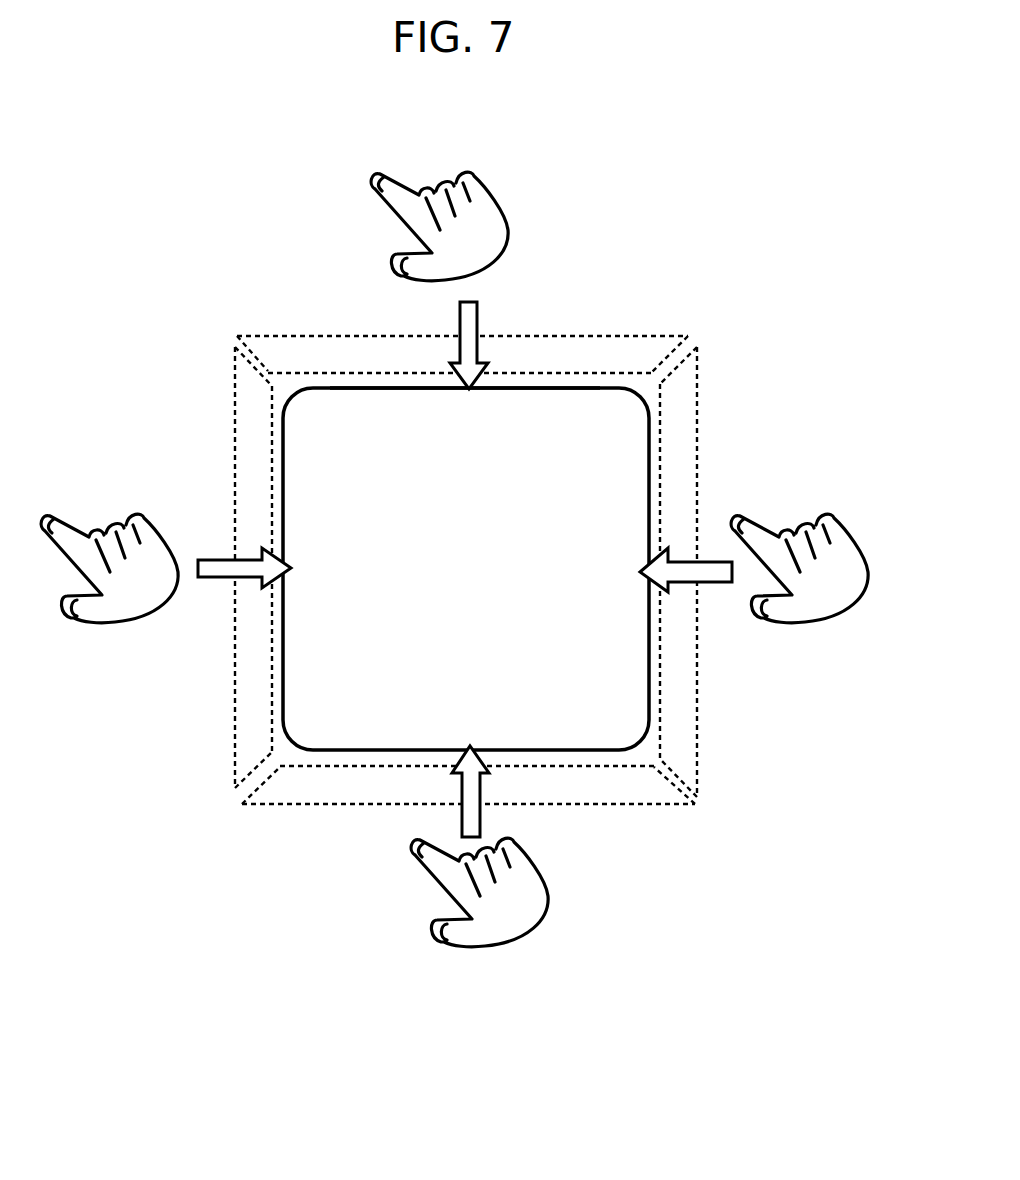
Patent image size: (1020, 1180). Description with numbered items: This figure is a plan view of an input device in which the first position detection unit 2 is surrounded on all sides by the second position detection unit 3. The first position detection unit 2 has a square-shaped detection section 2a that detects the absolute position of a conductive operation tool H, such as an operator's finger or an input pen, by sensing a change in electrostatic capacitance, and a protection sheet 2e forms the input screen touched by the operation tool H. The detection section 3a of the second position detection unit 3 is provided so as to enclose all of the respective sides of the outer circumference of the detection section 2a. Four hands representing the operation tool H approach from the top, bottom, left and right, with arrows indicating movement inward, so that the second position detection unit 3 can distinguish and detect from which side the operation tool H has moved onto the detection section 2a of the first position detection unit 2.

The first position detection unit 2 is at (590, 380).
The detection section 2a is at (553, 387).
The protection sheet 2e is at (507, 410).
The second position detection unit 3 is at (708, 370).
The detection section 3a is at (655, 335).
The operation tool H is at (147, 617).